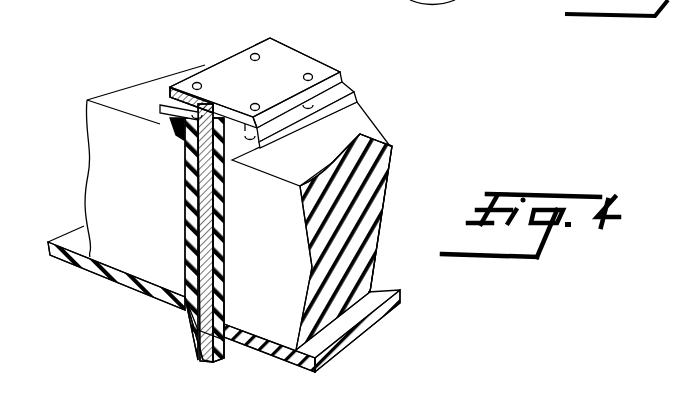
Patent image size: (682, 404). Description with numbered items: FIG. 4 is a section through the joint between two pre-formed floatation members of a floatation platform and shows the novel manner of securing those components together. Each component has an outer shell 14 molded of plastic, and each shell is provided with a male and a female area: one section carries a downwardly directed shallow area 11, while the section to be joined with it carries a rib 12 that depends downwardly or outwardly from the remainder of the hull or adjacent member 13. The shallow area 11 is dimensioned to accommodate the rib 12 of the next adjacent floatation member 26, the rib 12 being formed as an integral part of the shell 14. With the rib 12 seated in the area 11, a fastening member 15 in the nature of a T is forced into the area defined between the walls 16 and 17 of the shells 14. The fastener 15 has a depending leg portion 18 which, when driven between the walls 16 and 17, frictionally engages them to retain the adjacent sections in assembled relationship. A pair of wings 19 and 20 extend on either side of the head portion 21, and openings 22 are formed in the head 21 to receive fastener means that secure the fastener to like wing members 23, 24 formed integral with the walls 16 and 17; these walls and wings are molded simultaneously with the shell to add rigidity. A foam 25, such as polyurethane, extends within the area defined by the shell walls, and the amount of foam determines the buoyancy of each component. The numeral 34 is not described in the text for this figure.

The shallow area 11 is at (183, 352).
The rib 12 is at (226, 300).
The adjacent member 13 is at (393, 292).
The outer shell 14 is at (49, 258).
The fastening member 15 is at (301, 60).
The wall 16 is at (231, 192).
The wall 17 is at (185, 177).
The depending leg portion 18 is at (226, 217).
The wing 19 is at (228, 63).
The wing 20 is at (344, 80).
The head portion 21 is at (270, 90).
The openings 22 is at (259, 53).
The wing member 23 is at (144, 127).
The wing member 24 is at (362, 104).
The foam 25 is at (376, 198).
The floatation member 26 is at (131, 88).
The adjacent figure element 34 is at (480, 0).